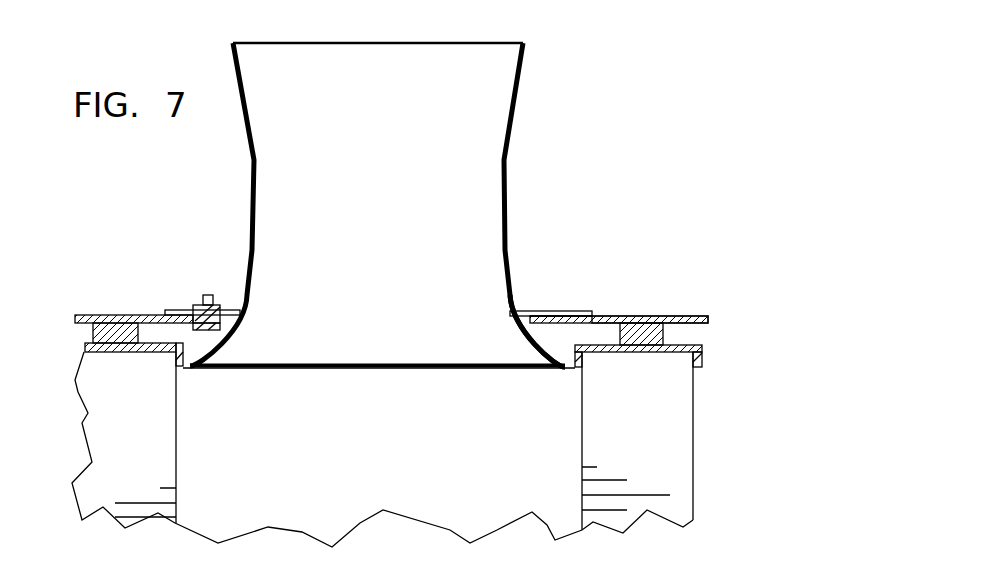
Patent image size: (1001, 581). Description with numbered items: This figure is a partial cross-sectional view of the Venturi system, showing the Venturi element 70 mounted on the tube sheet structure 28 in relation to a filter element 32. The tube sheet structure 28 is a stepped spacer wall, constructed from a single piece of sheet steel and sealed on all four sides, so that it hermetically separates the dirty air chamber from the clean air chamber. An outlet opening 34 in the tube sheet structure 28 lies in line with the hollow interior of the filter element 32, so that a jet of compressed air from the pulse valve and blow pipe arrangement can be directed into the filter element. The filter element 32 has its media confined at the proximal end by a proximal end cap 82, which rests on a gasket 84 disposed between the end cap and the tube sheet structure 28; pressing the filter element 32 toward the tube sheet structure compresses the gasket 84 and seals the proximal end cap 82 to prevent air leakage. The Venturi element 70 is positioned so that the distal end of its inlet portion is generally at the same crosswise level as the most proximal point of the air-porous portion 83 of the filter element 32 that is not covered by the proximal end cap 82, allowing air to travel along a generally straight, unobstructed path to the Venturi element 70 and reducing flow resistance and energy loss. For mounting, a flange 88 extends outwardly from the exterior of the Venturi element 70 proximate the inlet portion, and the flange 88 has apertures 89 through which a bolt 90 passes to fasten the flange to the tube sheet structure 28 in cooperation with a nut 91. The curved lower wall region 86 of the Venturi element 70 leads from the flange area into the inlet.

The Venturi element 70 is at (550, 163).
The curved lower wall portion 86 is at (507, 302).
The outlet opening 34 is at (532, 318).
The flange 88 is at (565, 318).
The tube sheet structure 28 is at (637, 320).
The gasket 84 is at (110, 327).
The aperture 89 is at (198, 313).
The bolt 90 is at (208, 298).
The nut 91 is at (202, 313).
The proximal end cap 82 is at (173, 367).
The filter element 32 is at (183, 470).
The air-porous portion 83 is at (698, 448).